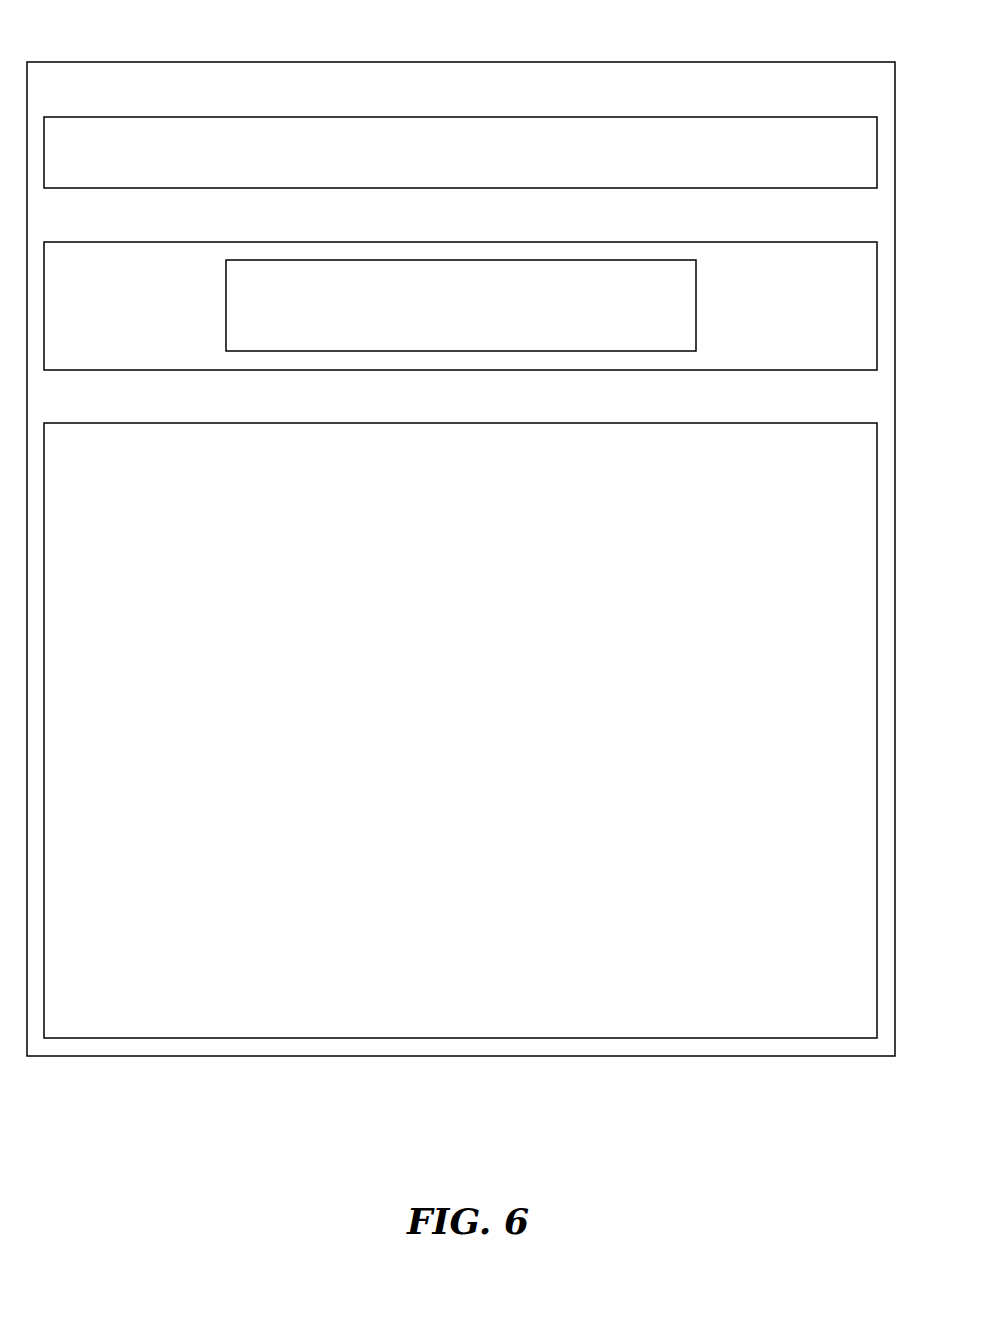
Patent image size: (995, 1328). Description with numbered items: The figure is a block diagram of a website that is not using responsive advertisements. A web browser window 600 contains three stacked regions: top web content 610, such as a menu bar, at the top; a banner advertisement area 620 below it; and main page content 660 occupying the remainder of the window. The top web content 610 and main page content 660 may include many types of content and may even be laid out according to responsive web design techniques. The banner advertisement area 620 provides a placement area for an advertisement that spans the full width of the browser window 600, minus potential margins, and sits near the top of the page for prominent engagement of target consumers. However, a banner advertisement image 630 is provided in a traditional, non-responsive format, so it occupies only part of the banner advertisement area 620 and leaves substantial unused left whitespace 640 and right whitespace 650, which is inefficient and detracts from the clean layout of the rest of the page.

The web browser window 600 is at (821, 62).
The top web content 610 is at (821, 117).
The banner advertisement area 620 is at (821, 242).
The banner advertisement image 630 is at (697, 340).
The left whitespace 640 is at (123, 316).
The right whitespace 650 is at (786, 316).
The main page content 660 is at (821, 423).